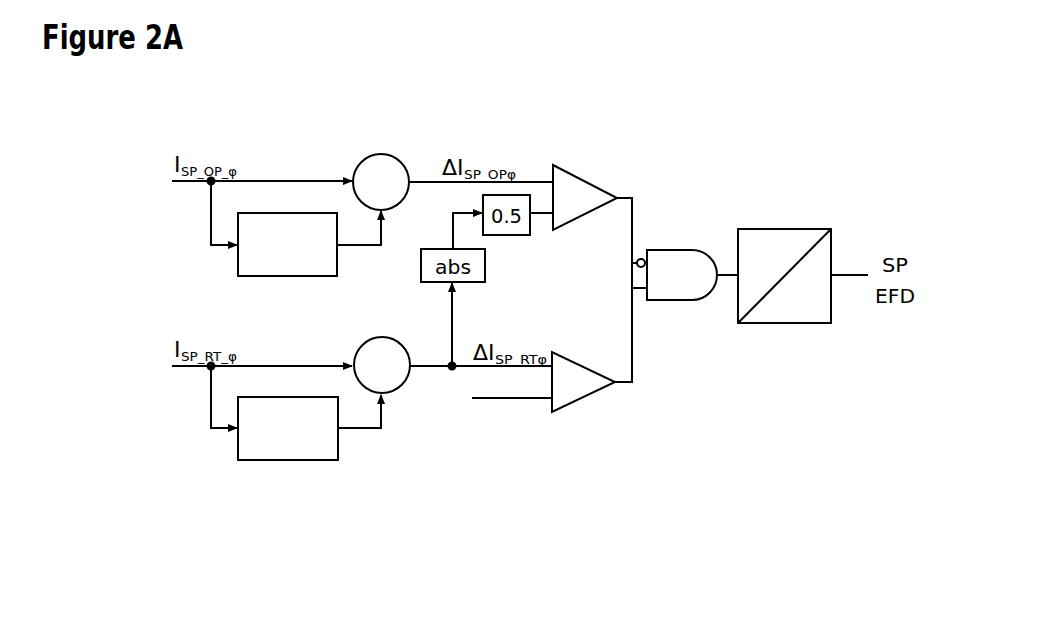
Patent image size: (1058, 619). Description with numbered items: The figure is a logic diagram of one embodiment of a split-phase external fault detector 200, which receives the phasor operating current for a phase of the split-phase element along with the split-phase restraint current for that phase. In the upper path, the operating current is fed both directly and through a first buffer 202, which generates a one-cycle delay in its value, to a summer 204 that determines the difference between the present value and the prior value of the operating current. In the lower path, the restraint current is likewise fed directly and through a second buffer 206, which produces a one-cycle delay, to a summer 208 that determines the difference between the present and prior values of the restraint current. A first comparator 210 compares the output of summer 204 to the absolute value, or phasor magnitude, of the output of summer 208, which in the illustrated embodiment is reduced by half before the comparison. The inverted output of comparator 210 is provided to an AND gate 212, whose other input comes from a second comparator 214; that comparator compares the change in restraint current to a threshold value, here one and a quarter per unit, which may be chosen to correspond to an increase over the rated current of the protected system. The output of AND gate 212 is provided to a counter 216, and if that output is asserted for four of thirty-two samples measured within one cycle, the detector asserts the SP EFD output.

The split-phase external fault detector 200 is at (146, 126).
The first buffer 202 is at (293, 276).
The summer 204 is at (380, 153).
The second buffer 206 is at (298, 460).
The summer 208 is at (381, 338).
The first comparator 210 is at (585, 178).
The AND gate 212 is at (667, 250).
The second comparator 214 is at (582, 398).
The counter 216 is at (797, 229).